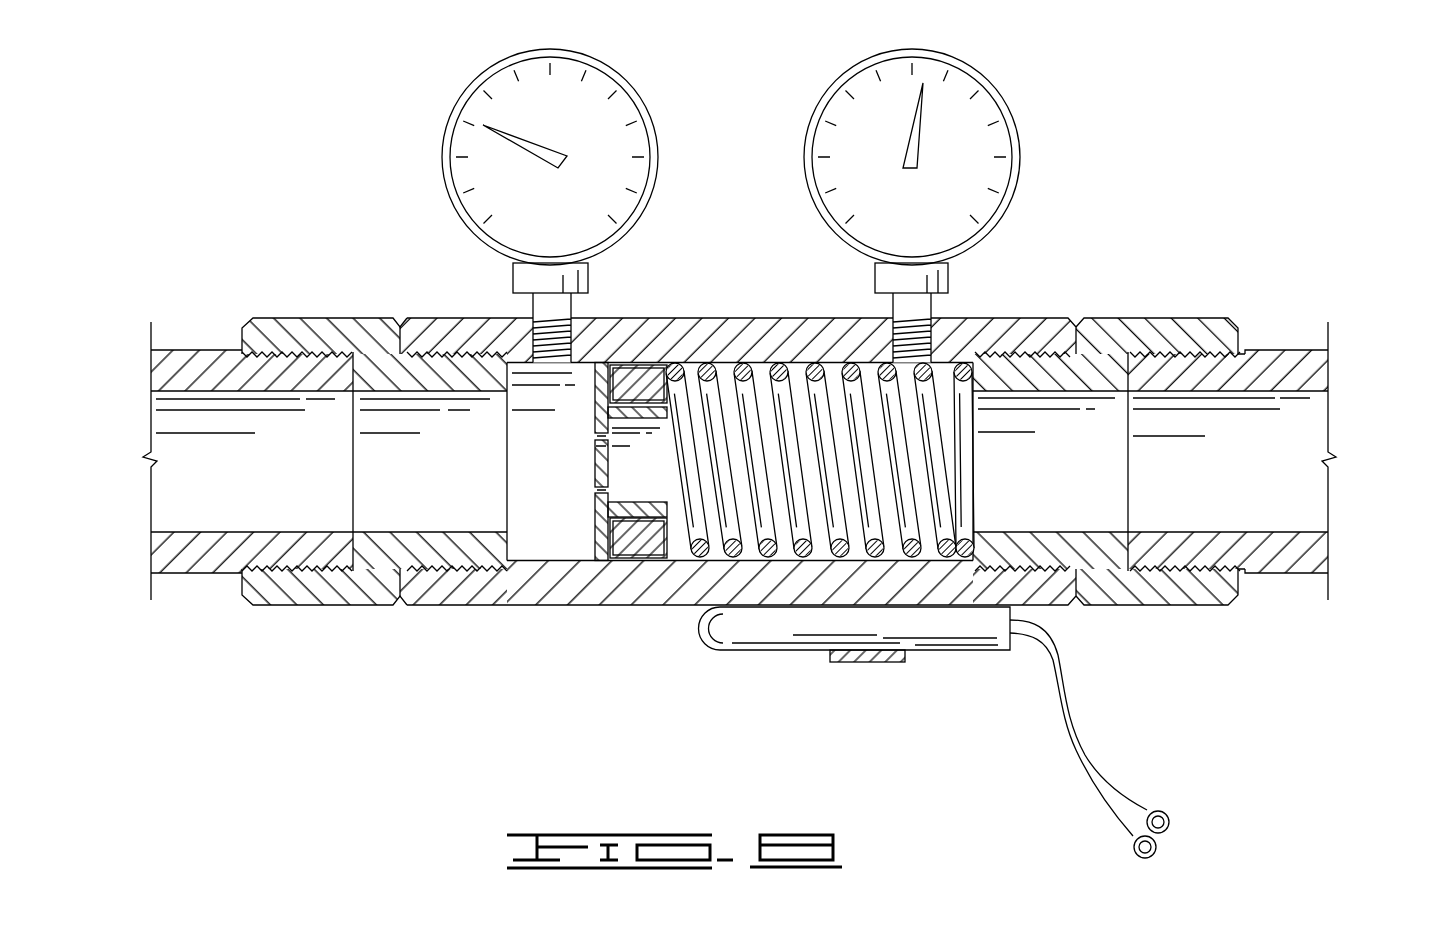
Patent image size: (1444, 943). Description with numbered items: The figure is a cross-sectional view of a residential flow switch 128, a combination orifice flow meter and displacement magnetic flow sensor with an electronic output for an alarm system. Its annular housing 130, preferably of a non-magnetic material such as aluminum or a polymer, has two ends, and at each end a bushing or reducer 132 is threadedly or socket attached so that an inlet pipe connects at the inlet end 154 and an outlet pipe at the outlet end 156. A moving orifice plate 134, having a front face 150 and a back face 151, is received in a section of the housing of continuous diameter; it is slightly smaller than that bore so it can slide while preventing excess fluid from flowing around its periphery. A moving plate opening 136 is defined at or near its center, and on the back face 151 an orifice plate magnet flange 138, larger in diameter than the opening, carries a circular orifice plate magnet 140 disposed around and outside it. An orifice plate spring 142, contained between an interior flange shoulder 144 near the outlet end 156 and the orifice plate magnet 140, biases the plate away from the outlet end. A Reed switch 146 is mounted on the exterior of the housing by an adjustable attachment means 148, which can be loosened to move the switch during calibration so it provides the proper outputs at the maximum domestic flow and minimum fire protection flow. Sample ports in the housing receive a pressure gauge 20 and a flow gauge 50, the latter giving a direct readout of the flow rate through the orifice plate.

The pressure gauge 20 is at (627, 80).
The flow gauge 50 is at (997, 90).
The residential flow switch 128 is at (374, 243).
The annular housing 130 is at (484, 607).
The bushing or reducer 132 is at (1150, 318).
The moving orifice plate 134 is at (600, 555).
The moving plate opening 136 is at (598, 472).
The orifice plate magnet flange 138 is at (643, 512).
The orifice plate magnet 140 is at (648, 378).
The orifice plate spring 142 is at (747, 362).
The interior flange shoulder 144 is at (965, 527).
The Reed switch 146 is at (940, 653).
The adjustable attachment means 148 is at (849, 663).
The front face 150 is at (596, 398).
The back face 151 is at (627, 543).
The inlet end 154 is at (182, 495).
The outlet end 156 is at (1297, 505).